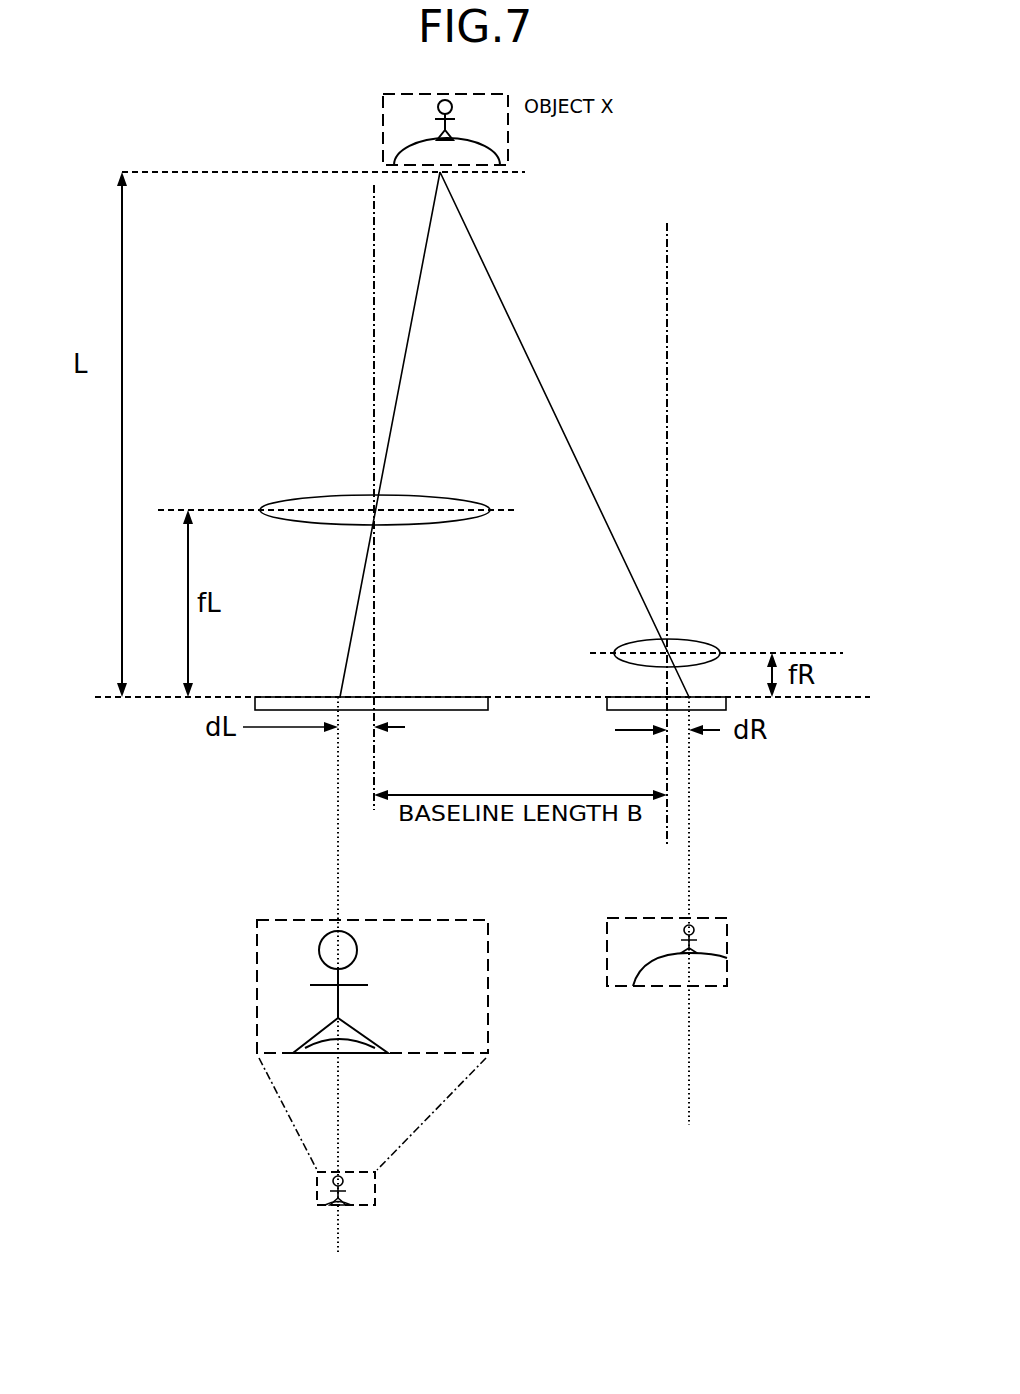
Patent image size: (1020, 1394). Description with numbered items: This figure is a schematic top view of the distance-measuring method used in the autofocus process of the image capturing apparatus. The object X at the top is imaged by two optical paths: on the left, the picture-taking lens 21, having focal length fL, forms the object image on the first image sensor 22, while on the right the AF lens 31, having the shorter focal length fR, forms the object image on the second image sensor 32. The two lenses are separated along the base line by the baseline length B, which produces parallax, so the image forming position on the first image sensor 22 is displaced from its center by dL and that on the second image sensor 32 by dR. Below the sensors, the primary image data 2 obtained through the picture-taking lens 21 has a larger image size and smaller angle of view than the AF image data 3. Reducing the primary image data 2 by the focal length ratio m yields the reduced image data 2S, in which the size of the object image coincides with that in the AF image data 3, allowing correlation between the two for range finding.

The primary image data 2 is at (257, 988).
The reduced image data 2S is at (317, 1197).
The AF image data 3 is at (727, 930).
The picture-taking lens 21 is at (357, 494).
The first image sensor 22 is at (405, 697).
The AF lens 31 is at (685, 640).
The second image sensor 32 is at (612, 697).